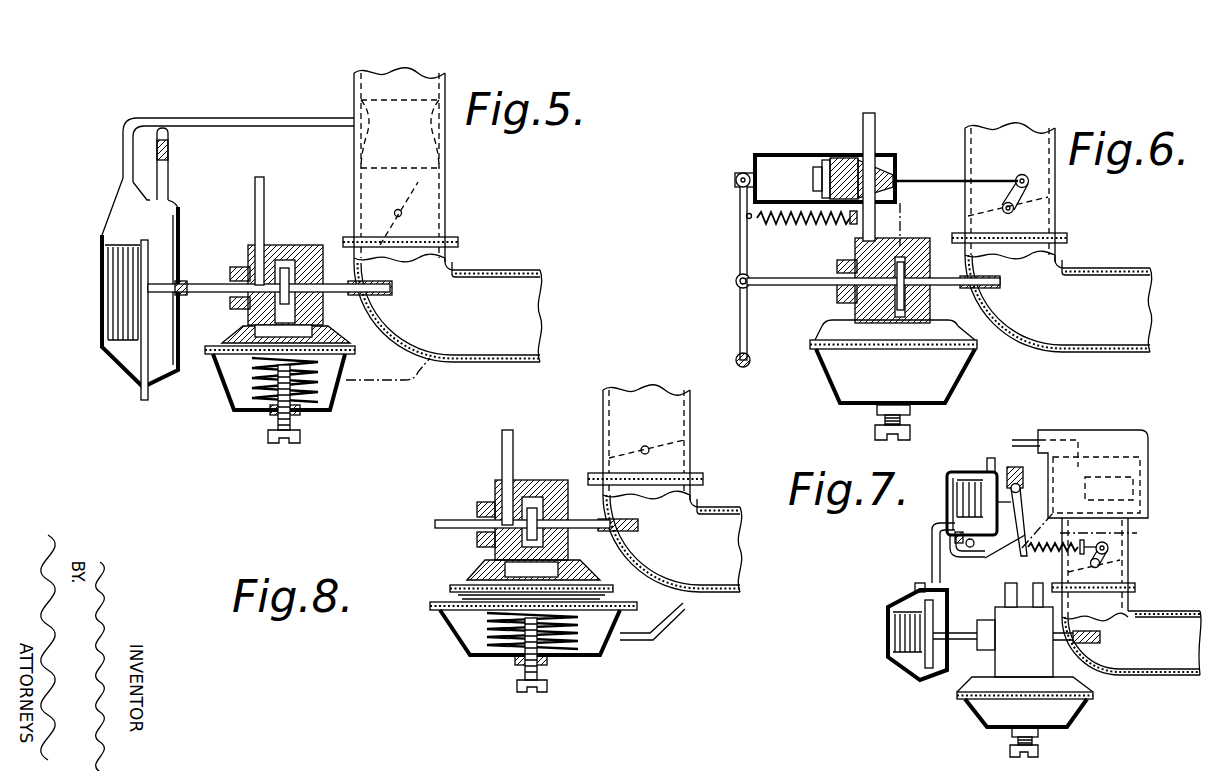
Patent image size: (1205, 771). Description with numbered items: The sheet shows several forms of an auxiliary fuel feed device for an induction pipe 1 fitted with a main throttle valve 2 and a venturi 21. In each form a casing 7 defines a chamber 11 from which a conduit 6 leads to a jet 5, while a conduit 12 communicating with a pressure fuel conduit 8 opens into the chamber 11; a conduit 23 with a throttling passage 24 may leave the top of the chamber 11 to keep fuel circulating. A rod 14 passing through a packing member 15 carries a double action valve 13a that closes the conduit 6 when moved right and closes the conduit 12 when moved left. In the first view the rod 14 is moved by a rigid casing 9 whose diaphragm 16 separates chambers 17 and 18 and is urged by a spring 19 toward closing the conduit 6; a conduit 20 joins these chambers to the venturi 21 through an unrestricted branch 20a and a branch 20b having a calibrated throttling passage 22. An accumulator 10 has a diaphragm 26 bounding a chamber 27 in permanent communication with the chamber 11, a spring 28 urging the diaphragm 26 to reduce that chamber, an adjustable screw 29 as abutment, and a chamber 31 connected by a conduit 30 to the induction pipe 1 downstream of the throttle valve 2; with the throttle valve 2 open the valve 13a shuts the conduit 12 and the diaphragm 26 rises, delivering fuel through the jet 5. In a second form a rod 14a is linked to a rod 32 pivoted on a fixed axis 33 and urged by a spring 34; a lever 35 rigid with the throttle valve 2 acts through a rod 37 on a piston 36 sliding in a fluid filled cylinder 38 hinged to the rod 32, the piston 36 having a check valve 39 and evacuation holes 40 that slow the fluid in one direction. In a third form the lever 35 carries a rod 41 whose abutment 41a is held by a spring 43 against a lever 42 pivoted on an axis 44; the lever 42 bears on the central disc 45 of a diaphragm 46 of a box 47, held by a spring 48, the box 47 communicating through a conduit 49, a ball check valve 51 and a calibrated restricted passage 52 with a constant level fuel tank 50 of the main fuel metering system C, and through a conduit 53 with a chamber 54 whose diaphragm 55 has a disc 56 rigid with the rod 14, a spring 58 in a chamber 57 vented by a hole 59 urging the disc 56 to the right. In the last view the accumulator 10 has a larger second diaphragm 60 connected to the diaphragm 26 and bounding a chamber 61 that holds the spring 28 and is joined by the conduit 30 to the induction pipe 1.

In FIG. 5, the induction pipe 1 is at (516, 272).
In FIG. 6, the induction pipe 1 is at (1117, 268).
In FIG. 8, the induction pipe 1 is at (733, 513).
In FIG. 7, the induction pipe 1 is at (1142, 670).
In FIG. 5, the main throttle valve 2 is at (403, 216).
In FIG. 6, the main throttle valve 2 is at (1040, 192).
In FIG. 8, the main throttle valve 2 is at (670, 434).
In FIG. 7, the main throttle valve 2 is at (1125, 566).
In FIG. 5, the jet 5 is at (391, 289).
In FIG. 6, the jet 5 is at (1000, 283).
In FIG. 8, the jet 5 is at (638, 527).
In FIG. 7, the jet 5 is at (1100, 636).
In FIG. 5, the conduit 6 is at (336, 293).
In FIG. 6, the conduit 6 is at (942, 290).
In FIG. 8, the conduit 6 is at (598, 524).
In FIG. 7, the conduit 6 is at (1065, 642).
In FIG. 5, the casing 7 is at (276, 246).
In FIG. 6, the casing 7 is at (927, 240).
In FIG. 8, the casing 7 is at (560, 480).
In FIG. 7, the casing 7 is at (1033, 655).
In FIG. 5, the conduit 8 is at (255, 196).
In FIG. 6, the conduit 8 is at (876, 128).
In FIG. 8, the conduit 8 is at (513, 444).
In FIG. 7, the conduit 8 is at (1005, 590).
In FIG. 5, the rigid casing 9 is at (104, 352).
In FIG. 7, the rigid casing 9 is at (903, 668).
In FIG. 5, the accumulator 10 is at (230, 398).
In FIG. 6, the accumulator 10 is at (832, 390).
In FIG. 8, the accumulator 10 is at (462, 644).
In FIG. 7, the accumulator 10 is at (1075, 718).
In FIG. 5, the chamber 11 is at (296, 247).
In FIG. 6, the chamber 11 is at (868, 312).
In FIG. 8, the chamber 11 is at (533, 497).
In FIG. 5, the conduit 12 is at (238, 304).
In FIG. 6, the conduit 12 is at (858, 266).
In FIG. 8, the conduit 12 is at (480, 545).
In FIG. 5, the double action valve 13a is at (316, 284).
In FIG. 6, the double action valve 13a is at (903, 312).
In FIG. 8, the double action valve 13a is at (548, 545).
In FIG. 5, the rod 14 is at (204, 289).
In FIG. 8, the rod 14 is at (452, 514).
In FIG. 7, the rod 14 is at (965, 633).
In FIG. 6, the rod 14a is at (773, 278).
In FIG. 5, the packing member 15 is at (243, 268).
In FIG. 6, the packing member 15 is at (836, 291).
In FIG. 8, the packing member 15 is at (484, 500).
In FIG. 5, the diaphragm 16 is at (136, 222).
In FIG. 5, the chamber 17 is at (132, 372).
In FIG. 5, the chamber 18 is at (157, 372).
In FIG. 5, the spring 19 is at (120, 313).
In FIG. 5, the conduit 20 is at (247, 118).
In FIG. 5, the branch 20a is at (125, 165).
In FIG. 5, the branch 20b is at (170, 170).
In FIG. 5, the venturi 21 is at (442, 141).
In FIG. 5, the calibrated throttling passage 22 is at (170, 153).
In FIG. 6, the conduit 23 is at (908, 218).
In FIG. 7, the conduit 23 is at (1038, 607).
In FIG. 6, the throttling passage 24 is at (930, 245).
In FIG. 5, the diaphragm 26 is at (224, 358).
In FIG. 8, the diaphragm 26 is at (470, 586).
In FIG. 5, the chamber 27 is at (345, 344).
In FIG. 8, the chamber 27 is at (588, 586).
In FIG. 5, the spring 28 is at (272, 400).
In FIG. 8, the spring 28 is at (515, 655).
In FIG. 5, the screw 29 is at (292, 432).
In FIG. 6, the screw 29 is at (876, 430).
In FIG. 8, the screw 29 is at (540, 681).
In FIG. 7, the screw 29 is at (1010, 750).
In FIG. 5, the conduit 30 is at (410, 379).
In FIG. 8, the conduit 30 is at (672, 621).
In FIG. 5, the chamber 31 is at (333, 391).
In FIG. 6, the rod 32 is at (740, 256).
In FIG. 6, the fixed axis 33 is at (736, 360).
In FIG. 6, the spring 34 is at (806, 223).
In FIG. 6, the lever 35 is at (1018, 177).
In FIG. 7, the lever 35 is at (1110, 549).
In FIG. 6, the piston 36 is at (848, 157).
In FIG. 6, the rod 37 is at (925, 179).
In FIG. 6, the fluidtight cylinder 38 is at (781, 155).
In FIG. 6, the check valve 39 is at (813, 180).
In FIG. 6, the evacuation holes 40 is at (890, 170).
In FIG. 7, the rod 41 is at (1062, 557).
In FIG. 7, the abutment 41a is at (1008, 556).
In FIG. 7, the lever 42 is at (1022, 497).
In FIG. 7, the spring 43 is at (1079, 530).
In FIG. 7, the axis 44 is at (1015, 470).
In FIG. 7, the central disc 45 is at (948, 503).
In FIG. 7, the diaphragm 46 is at (991, 470).
In FIG. 7, the box 47 is at (950, 487).
In FIG. 7, the spring 48 is at (964, 478).
In FIG. 7, the conduit 49 is at (965, 558).
In FIG. 7, the constant level fuel tank 50 is at (1148, 472).
In FIG. 7, the ball check valve 51 is at (965, 543).
In FIG. 7, the calibrated restricted passage 52 is at (952, 530).
In FIG. 7, the conduit 53 is at (932, 570).
In FIG. 7, the chamber 54 is at (945, 658).
In FIG. 7, the diaphragm 55 is at (930, 672).
In FIG. 7, the central disc 56 is at (935, 615).
In FIG. 7, the chamber 57 is at (889, 655).
In FIG. 7, the spring 58 is at (913, 590).
In FIG. 7, the hole 59 is at (890, 632).
In FIG. 8, the second diaphragm 60 is at (468, 613).
In FIG. 8, the chamber 61 is at (590, 642).
In FIG. 7, the main fuel metering system C is at (1117, 431).